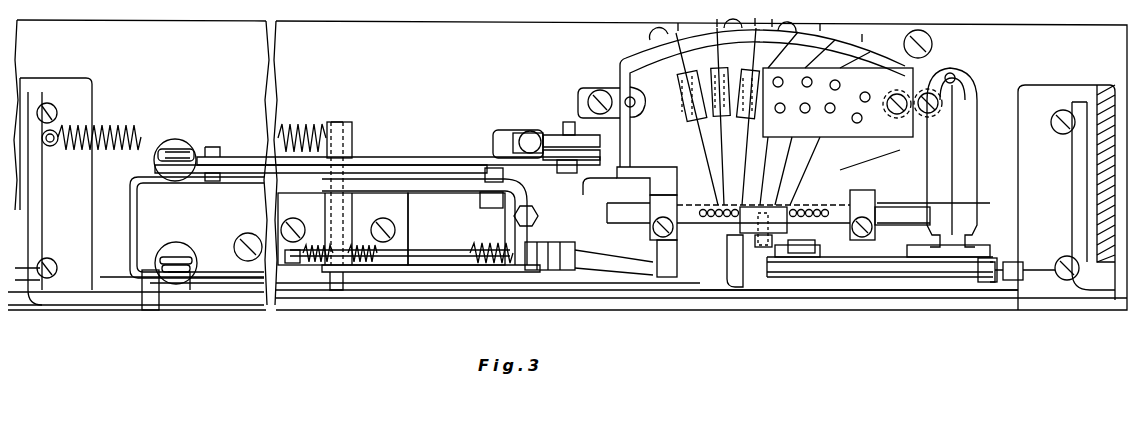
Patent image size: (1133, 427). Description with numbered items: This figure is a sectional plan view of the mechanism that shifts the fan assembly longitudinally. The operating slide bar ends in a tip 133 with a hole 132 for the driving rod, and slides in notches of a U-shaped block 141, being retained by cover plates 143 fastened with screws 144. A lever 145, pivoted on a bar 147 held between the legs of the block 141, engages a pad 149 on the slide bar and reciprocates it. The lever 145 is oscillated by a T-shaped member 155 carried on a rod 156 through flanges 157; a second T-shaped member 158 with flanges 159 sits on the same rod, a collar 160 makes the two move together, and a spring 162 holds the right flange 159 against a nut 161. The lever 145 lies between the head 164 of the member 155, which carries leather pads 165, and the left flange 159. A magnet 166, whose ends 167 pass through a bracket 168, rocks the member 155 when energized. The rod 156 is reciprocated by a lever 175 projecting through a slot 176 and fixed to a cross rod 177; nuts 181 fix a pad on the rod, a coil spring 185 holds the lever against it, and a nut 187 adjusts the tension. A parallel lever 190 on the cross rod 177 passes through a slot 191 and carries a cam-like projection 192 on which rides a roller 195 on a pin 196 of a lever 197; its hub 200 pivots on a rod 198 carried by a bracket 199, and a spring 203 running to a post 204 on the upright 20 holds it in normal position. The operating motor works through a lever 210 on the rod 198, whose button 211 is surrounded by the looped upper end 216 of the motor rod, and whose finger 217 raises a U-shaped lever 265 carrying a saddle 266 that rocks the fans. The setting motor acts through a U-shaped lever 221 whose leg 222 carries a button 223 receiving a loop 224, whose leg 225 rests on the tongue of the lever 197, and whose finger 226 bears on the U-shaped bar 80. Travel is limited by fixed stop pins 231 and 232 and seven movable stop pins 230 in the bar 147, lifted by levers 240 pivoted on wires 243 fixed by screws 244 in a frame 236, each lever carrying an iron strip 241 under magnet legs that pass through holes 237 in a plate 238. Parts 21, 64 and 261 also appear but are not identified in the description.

The upright 20 is at (56, 191).
The plate 21 is at (1103, 190).
The screw 64 is at (48, 276).
The U-shaped bar 80 is at (369, 300).
The hole 132 is at (902, 216).
The tip 133 is at (932, 216).
The U-shaped block 141 is at (652, 193).
The cover plates 143 is at (610, 212).
The screws 144 is at (650, 230).
The lever 145 is at (733, 258).
The bar 147 is at (790, 203).
The pad 149 is at (764, 250).
The T-shaped member 155 is at (830, 282).
The rod 156 is at (700, 268).
The flanges 157 is at (783, 265).
The second T-shaped member 158 is at (878, 283).
The flanges 159 is at (728, 245).
The collar 160 is at (760, 248).
The nut 161 is at (1013, 282).
The spring 162 is at (585, 269).
The head 164 is at (830, 247).
The pads 165 is at (805, 255).
The magnet 166 is at (965, 110).
The ends 167 is at (965, 247).
The bracket 168 is at (990, 250).
The lever 175 is at (533, 272).
The slot 176 is at (498, 243).
The cross rod 177 is at (512, 148).
The nuts 181 is at (622, 270).
The coil spring 185 is at (490, 264).
The nut 187 is at (303, 263).
The lever 190 is at (530, 131).
The slot 191 is at (500, 130).
The cam-like projection 192 is at (562, 122).
The roller 195 is at (578, 170).
The pin 196 is at (530, 186).
The lever 197 is at (514, 176).
The rod 198 is at (338, 124).
The bracket 199 is at (391, 229).
The hub 200 is at (353, 142).
The spring 203 is at (302, 118).
The post 204 is at (60, 124).
The lever 210 is at (232, 165).
The button 211 is at (186, 149).
The upper end 216 is at (157, 148).
The finger 217 is at (480, 204).
The U-shaped lever 221 is at (135, 240).
The leg 222 is at (240, 282).
The button 223 is at (185, 259).
The loop 224 is at (180, 276).
The leg 225 is at (248, 175).
The finger 226 is at (148, 300).
The stop pins 230 is at (744, 205).
The stop pin 231 is at (705, 195).
The stop pin 232 is at (840, 176).
The frame 236 is at (632, 120).
The holes 237 is at (814, 106).
The plate 238 is at (886, 112).
The levers 240 is at (720, 122).
The iron strip 241 is at (682, 94).
The wires 243 is at (700, 32).
The screws 244 is at (660, 30).
The lug 261 is at (210, 183).
The U-shaped lever 265 is at (437, 269).
The saddle 266 is at (514, 218).